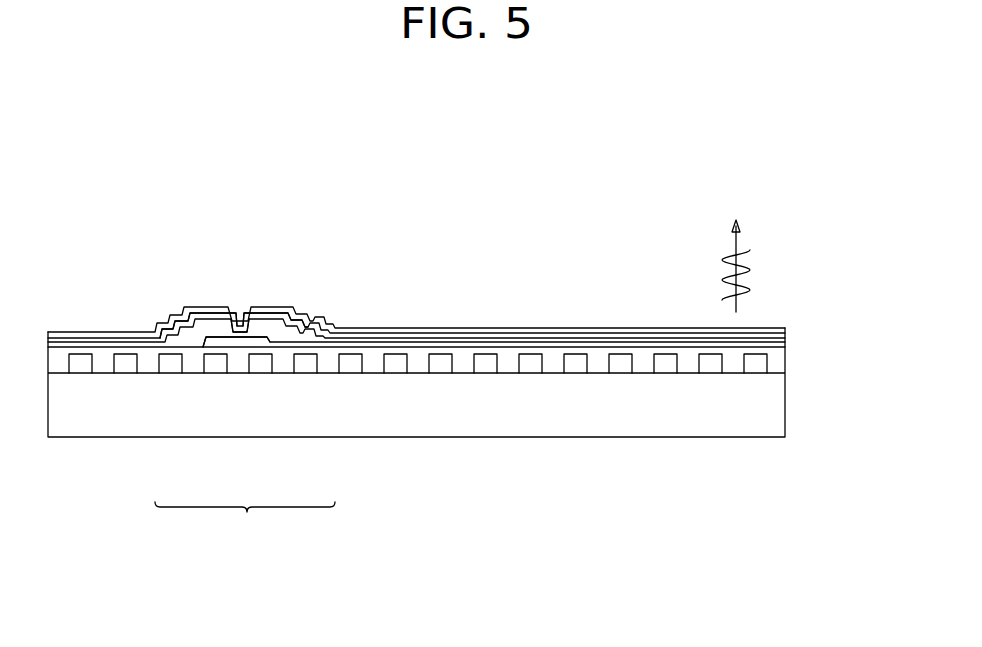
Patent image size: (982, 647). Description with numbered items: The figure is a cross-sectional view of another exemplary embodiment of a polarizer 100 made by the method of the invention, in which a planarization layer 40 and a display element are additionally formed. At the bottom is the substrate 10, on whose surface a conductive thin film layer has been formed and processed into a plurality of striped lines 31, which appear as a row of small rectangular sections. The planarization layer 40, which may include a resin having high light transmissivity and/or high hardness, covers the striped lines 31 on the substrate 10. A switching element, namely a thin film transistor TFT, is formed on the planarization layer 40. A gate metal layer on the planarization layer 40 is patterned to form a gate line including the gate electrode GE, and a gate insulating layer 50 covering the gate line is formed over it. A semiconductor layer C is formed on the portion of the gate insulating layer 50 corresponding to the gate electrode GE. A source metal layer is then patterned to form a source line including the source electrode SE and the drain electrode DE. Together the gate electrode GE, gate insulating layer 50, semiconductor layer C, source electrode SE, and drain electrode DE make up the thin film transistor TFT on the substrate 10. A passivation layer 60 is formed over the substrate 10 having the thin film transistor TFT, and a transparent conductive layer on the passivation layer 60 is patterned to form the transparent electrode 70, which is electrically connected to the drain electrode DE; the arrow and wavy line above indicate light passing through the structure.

The polarizer 100 is at (462, 148).
The substrate 10 is at (781, 403).
The planarization layer 40 is at (779, 364).
The striped lines 31 is at (440, 365).
The gate insulating layer 50 is at (785, 342).
The passivation layer 60 is at (785, 334).
The transparent electrode 70 is at (785, 328).
The source electrode SE is at (168, 334).
The gate electrode GE is at (240, 340).
The semiconductor layer C is at (272, 330).
The drain electrode DE is at (325, 333).
The thin film transistor TFT is at (245, 524).